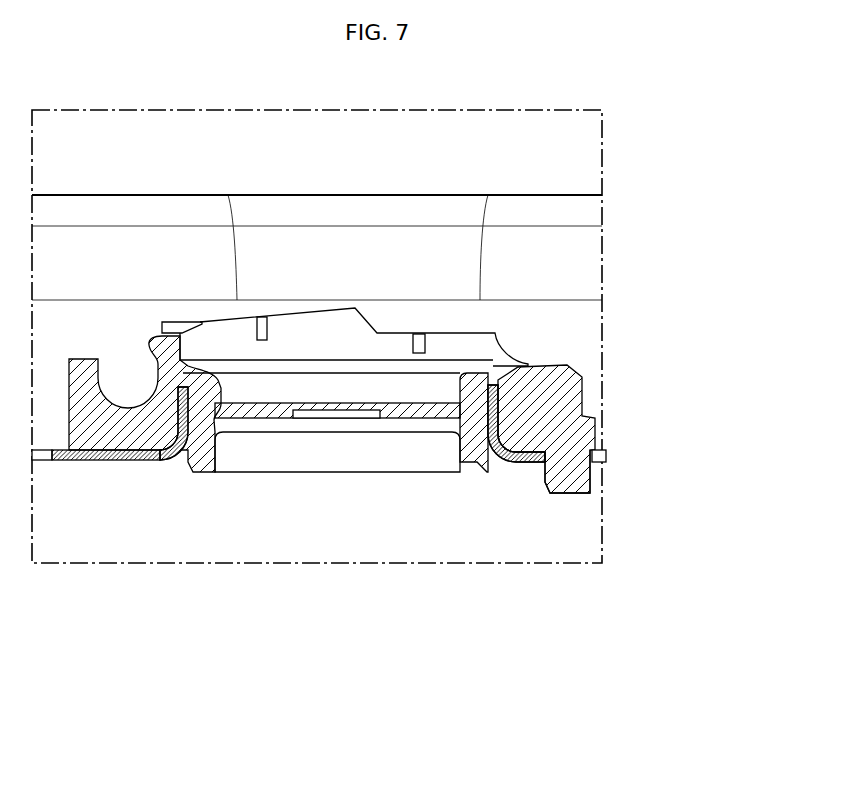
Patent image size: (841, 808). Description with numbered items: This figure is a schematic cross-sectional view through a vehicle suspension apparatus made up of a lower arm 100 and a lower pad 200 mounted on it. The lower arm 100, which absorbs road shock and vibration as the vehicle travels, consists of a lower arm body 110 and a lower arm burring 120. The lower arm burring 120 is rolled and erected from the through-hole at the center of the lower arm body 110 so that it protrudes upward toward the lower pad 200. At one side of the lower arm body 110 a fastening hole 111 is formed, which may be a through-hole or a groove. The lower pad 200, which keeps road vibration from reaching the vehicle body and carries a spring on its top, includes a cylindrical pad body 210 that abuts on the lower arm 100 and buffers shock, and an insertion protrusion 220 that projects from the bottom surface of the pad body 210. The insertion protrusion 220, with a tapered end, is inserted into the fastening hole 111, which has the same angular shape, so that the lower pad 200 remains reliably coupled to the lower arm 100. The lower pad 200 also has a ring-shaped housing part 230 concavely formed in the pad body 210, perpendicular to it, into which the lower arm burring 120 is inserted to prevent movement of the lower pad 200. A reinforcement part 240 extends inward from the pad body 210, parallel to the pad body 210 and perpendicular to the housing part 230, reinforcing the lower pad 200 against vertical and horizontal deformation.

The lower arm 100 is at (188, 680).
The lower arm body 110 is at (98, 460).
The fastening hole 111 is at (583, 468).
The lower arm burring 120 is at (212, 457).
The lower pad 200 is at (628, 390).
The pad body 210 is at (463, 446).
The insertion protrusion 220 is at (575, 480).
The housing part 230 is at (498, 427).
The reinforcement part 240 is at (417, 414).